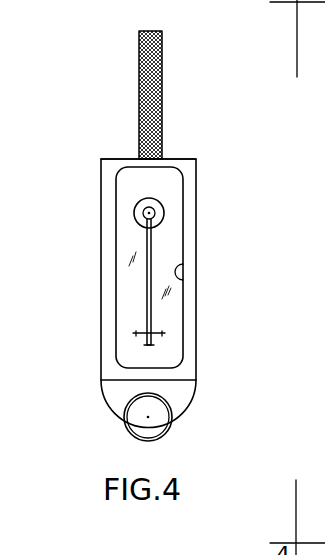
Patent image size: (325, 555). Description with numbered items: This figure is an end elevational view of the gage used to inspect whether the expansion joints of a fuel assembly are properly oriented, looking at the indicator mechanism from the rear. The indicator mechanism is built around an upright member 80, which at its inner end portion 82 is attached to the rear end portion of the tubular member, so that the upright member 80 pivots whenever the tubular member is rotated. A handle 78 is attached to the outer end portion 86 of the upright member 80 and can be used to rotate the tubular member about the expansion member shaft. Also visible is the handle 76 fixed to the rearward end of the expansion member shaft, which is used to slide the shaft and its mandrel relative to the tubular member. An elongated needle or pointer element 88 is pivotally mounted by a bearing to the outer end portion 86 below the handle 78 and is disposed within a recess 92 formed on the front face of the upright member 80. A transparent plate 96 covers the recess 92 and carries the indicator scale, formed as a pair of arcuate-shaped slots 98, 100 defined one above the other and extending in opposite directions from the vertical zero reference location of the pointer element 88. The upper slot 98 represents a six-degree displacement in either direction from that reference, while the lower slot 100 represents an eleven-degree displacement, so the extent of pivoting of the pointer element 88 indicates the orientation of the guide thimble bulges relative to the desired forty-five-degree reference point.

The handle 76 is at (173, 420).
The handle 78 is at (163, 78).
The upright member 80 is at (197, 200).
The inner end portion 82 is at (197, 390).
The outer end portion 86 is at (196, 160).
The pointer element 88 is at (153, 250).
The recess 92 is at (180, 282).
The transparent plate 96 is at (127, 250).
The upper slot 98 is at (142, 328).
The lower slot 100 is at (136, 338).